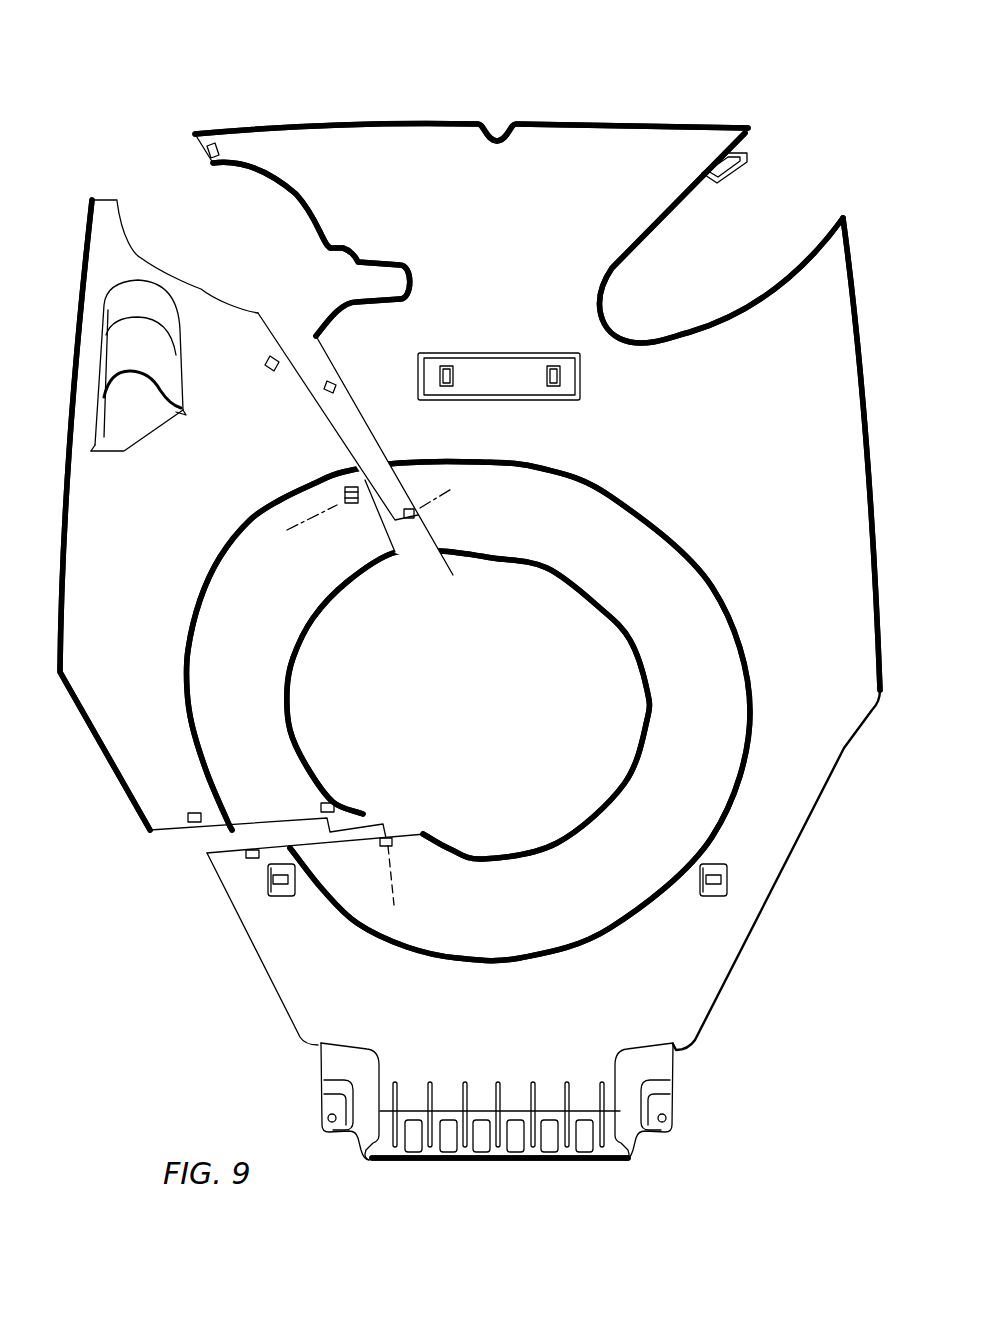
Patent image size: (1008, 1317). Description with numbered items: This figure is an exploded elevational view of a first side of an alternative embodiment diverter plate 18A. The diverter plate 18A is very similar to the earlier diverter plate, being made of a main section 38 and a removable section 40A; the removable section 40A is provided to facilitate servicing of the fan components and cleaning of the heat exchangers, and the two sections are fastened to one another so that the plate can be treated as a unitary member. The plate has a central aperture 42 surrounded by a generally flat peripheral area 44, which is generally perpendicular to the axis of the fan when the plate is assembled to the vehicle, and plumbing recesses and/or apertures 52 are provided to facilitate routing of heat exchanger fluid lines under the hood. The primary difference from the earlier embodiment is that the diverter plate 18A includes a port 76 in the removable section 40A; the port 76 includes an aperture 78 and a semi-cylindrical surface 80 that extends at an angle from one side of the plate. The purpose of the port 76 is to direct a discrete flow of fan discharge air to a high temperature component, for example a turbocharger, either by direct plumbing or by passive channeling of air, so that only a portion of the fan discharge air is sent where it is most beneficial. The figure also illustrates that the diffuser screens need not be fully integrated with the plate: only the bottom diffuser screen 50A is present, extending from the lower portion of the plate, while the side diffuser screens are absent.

The diverter plate 18A is at (600, 105).
The plumbing recesses and/or apertures 52 is at (186, 210).
The main section 38 is at (827, 358).
The removable section 40A is at (80, 480).
The semi-cylindrical surface 80 is at (157, 353).
The port 76 is at (189, 391).
The aperture 78 is at (134, 430).
The central aperture 42 is at (550, 703).
The peripheral area 44 is at (556, 905).
The bottom diffuser screen 50A is at (527, 1160).